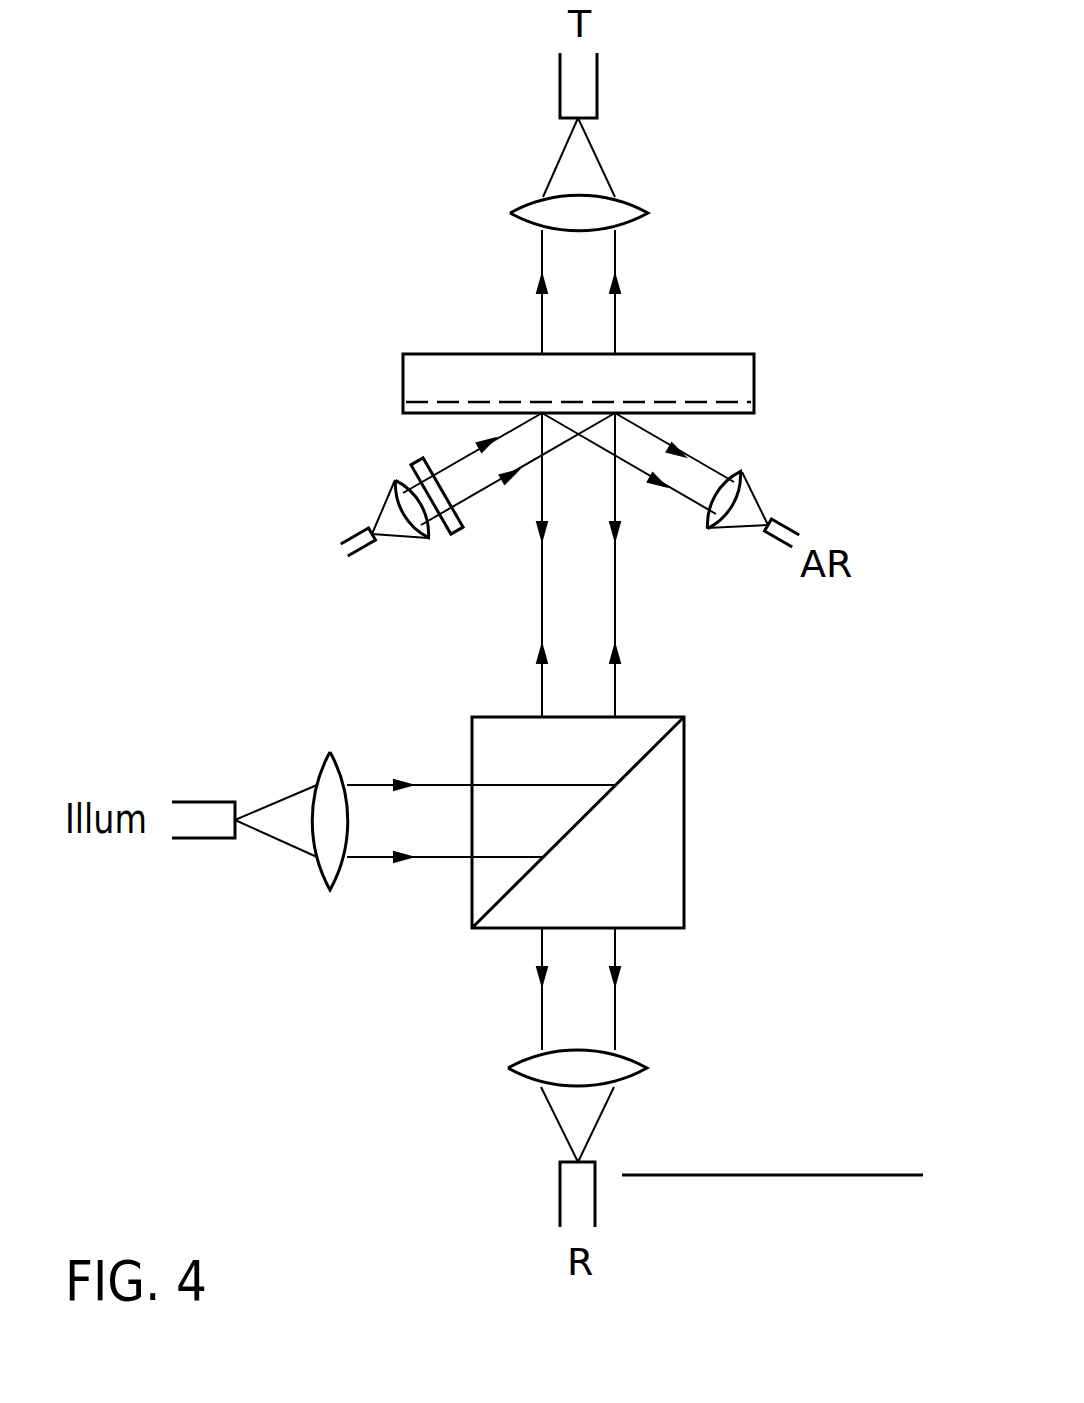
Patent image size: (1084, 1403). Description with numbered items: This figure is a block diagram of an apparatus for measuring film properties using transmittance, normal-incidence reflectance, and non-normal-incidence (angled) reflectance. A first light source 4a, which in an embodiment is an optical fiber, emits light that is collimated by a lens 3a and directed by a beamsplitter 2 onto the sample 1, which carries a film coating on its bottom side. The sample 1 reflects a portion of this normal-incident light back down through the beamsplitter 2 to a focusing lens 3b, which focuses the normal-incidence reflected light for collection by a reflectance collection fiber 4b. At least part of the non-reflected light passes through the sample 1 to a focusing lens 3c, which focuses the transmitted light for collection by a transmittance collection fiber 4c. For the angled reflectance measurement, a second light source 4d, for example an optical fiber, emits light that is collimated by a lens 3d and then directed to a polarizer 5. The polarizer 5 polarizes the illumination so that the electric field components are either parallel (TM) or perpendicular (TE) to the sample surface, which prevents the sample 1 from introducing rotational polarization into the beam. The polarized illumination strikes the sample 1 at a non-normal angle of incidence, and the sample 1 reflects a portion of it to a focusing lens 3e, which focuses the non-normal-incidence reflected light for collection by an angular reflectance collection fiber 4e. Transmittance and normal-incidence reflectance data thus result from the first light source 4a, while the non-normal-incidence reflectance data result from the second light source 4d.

The sample 1 is at (754, 375).
The beamsplitter 2 is at (684, 826).
The lens 3a is at (317, 766).
The focusing lens 3b is at (635, 1076).
The focusing lens 3c is at (633, 200).
The lens 3d is at (405, 480).
The focusing lens 3e is at (735, 478).
The first light source 4a is at (200, 800).
The reflectance collection fiber 4b is at (597, 1208).
The transmittance collection fiber 4c is at (598, 78).
The second light source 4d is at (360, 530).
The angular reflectance collection fiber 4e is at (780, 520).
The polarizer 5 is at (456, 526).